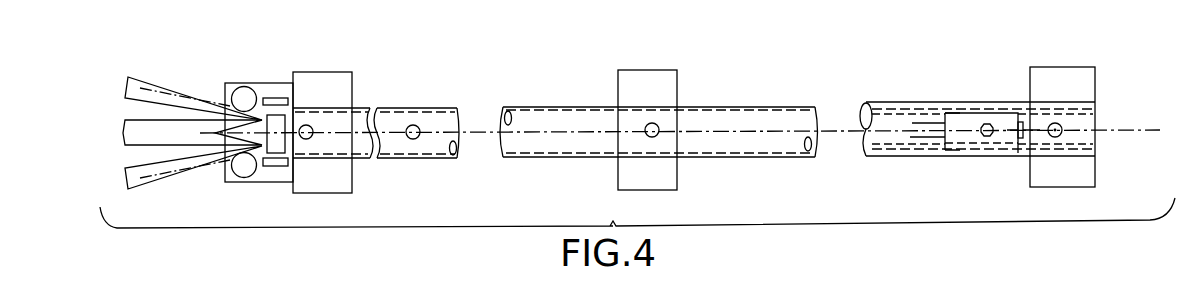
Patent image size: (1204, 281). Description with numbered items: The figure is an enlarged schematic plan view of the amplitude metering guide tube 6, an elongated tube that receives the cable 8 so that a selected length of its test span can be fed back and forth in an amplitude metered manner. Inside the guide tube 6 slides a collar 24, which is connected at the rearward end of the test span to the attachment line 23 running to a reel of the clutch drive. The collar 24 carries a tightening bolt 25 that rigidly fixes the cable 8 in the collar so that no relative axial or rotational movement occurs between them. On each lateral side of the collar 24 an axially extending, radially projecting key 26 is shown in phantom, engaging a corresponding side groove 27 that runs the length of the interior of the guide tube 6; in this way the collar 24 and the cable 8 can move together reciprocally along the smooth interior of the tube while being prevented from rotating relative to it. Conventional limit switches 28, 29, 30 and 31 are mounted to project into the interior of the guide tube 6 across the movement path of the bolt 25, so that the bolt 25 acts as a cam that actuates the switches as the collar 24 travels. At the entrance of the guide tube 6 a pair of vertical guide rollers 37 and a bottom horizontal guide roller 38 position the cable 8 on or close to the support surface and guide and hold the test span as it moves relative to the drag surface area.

The amplitude metering guide tube 6 is at (540, 117).
The cable 8 is at (912, 123).
The attachment line 23 is at (1113, 131).
The collar 24 is at (967, 135).
The tightening bolt 25 is at (988, 137).
The key 26 is at (960, 112).
The side groove 27 is at (880, 108).
The limit switch 28 is at (1062, 127).
The limit switch 29 is at (413, 126).
The limit switch 30 is at (305, 126).
The limit switch 31 is at (659, 128).
The vertical guide rollers 37 is at (233, 90).
The bottom horizontal guide roller 38 is at (275, 117).